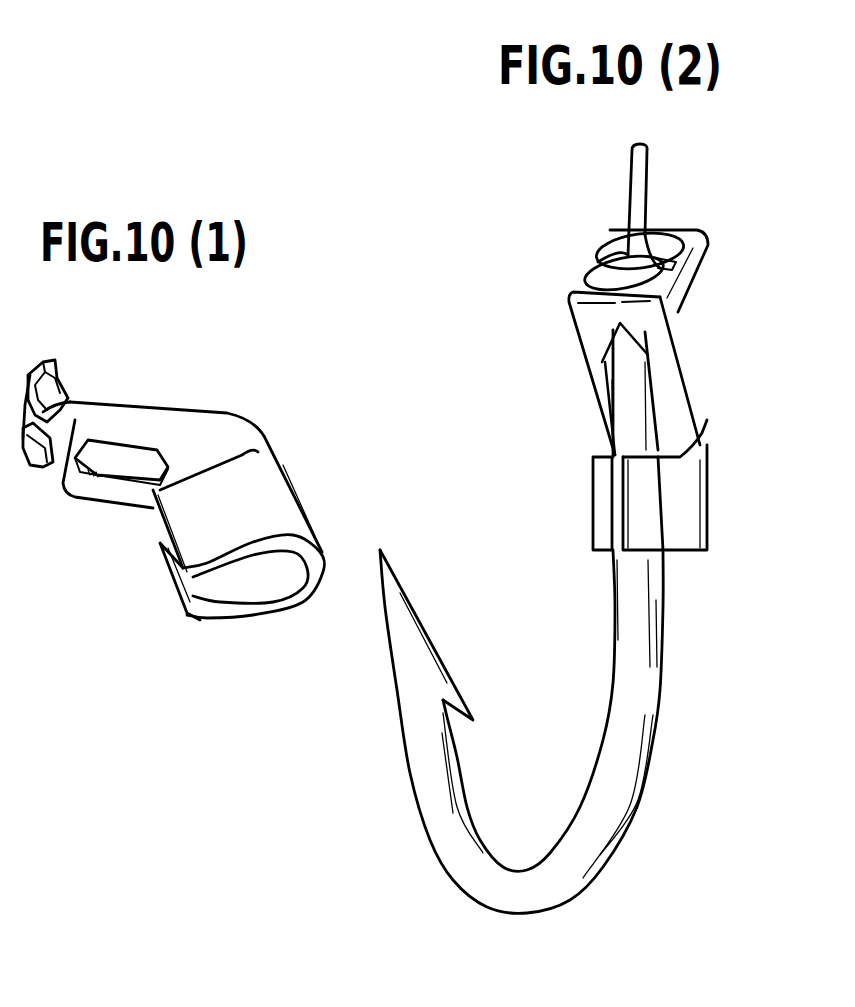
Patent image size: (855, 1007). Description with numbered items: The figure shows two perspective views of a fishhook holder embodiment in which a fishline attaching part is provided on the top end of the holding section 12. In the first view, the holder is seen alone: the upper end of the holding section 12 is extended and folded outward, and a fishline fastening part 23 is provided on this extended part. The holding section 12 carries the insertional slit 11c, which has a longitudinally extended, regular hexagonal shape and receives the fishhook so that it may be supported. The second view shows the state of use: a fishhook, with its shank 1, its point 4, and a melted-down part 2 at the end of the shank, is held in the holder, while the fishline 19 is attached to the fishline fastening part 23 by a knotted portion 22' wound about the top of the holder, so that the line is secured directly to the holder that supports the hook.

The shank 1 is at (622, 687).
The point 4 is at (417, 645).
The melted-down part 2 is at (694, 249).
The fishline 19 is at (643, 173).
The knot of wound line 22' is at (600, 261).
The holding section 12 is at (80, 492).
The insertional slit 11c is at (123, 456).
The fishline fastening part 23 is at (58, 386).